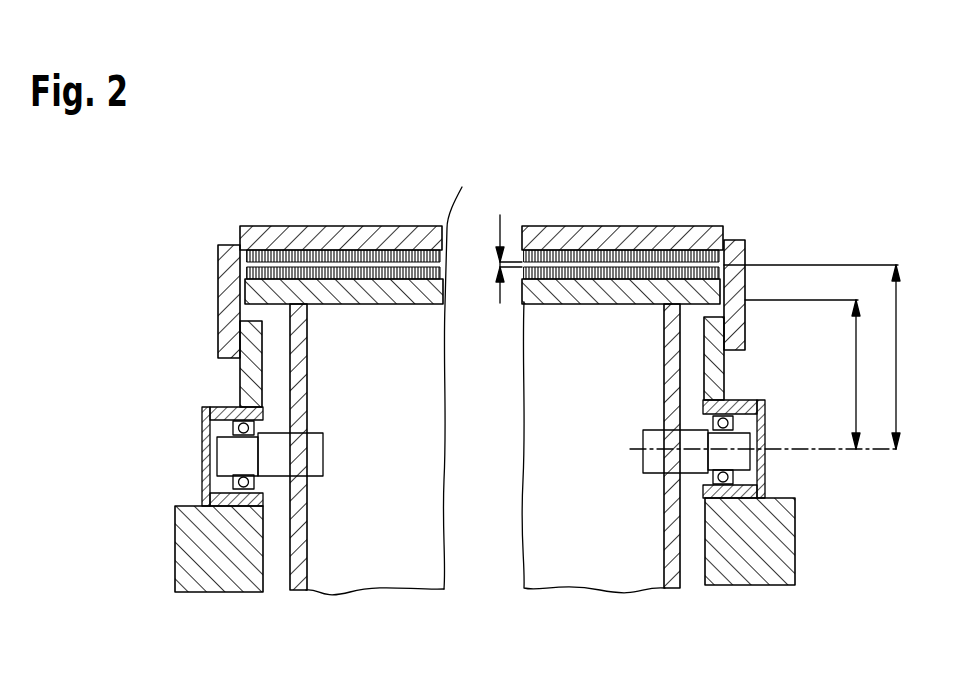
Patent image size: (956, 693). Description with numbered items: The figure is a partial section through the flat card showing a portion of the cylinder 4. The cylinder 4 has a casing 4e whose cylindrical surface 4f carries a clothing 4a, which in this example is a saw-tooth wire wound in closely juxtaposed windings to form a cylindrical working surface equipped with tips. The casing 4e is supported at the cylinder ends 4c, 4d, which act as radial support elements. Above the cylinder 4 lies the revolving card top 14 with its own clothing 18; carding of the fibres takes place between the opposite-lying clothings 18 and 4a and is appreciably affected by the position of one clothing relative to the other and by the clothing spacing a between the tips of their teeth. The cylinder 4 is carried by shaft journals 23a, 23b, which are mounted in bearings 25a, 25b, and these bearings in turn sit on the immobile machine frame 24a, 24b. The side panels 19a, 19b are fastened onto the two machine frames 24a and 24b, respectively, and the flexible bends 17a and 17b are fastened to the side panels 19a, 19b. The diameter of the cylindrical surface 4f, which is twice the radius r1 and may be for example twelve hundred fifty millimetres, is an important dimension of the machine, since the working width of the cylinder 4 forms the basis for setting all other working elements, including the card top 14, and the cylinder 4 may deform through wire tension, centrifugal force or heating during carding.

The revolving card top 14 is at (255, 231).
The clothing 18 is at (523, 262).
The clothing spacing a is at (500, 228).
The cylinder 4 is at (390, 576).
The clothing 4a is at (459, 376).
The cylinder end 4c is at (297, 590).
The cylinder end 4d is at (668, 588).
The casing 4e is at (545, 305).
The cylindrical surface 4f is at (369, 292).
The flexible bend 17a is at (228, 275).
The flexible bend 17b is at (740, 258).
The side panel 19a is at (240, 400).
The side panel 19b is at (718, 373).
The shaft journal 23a is at (313, 465).
The shaft journal 23b is at (641, 462).
The machine frame 24a is at (182, 552).
The machine frame 24b is at (788, 555).
The bearing 25a is at (203, 479).
The bearing 25b is at (765, 482).
The radius r1 is at (855, 340).